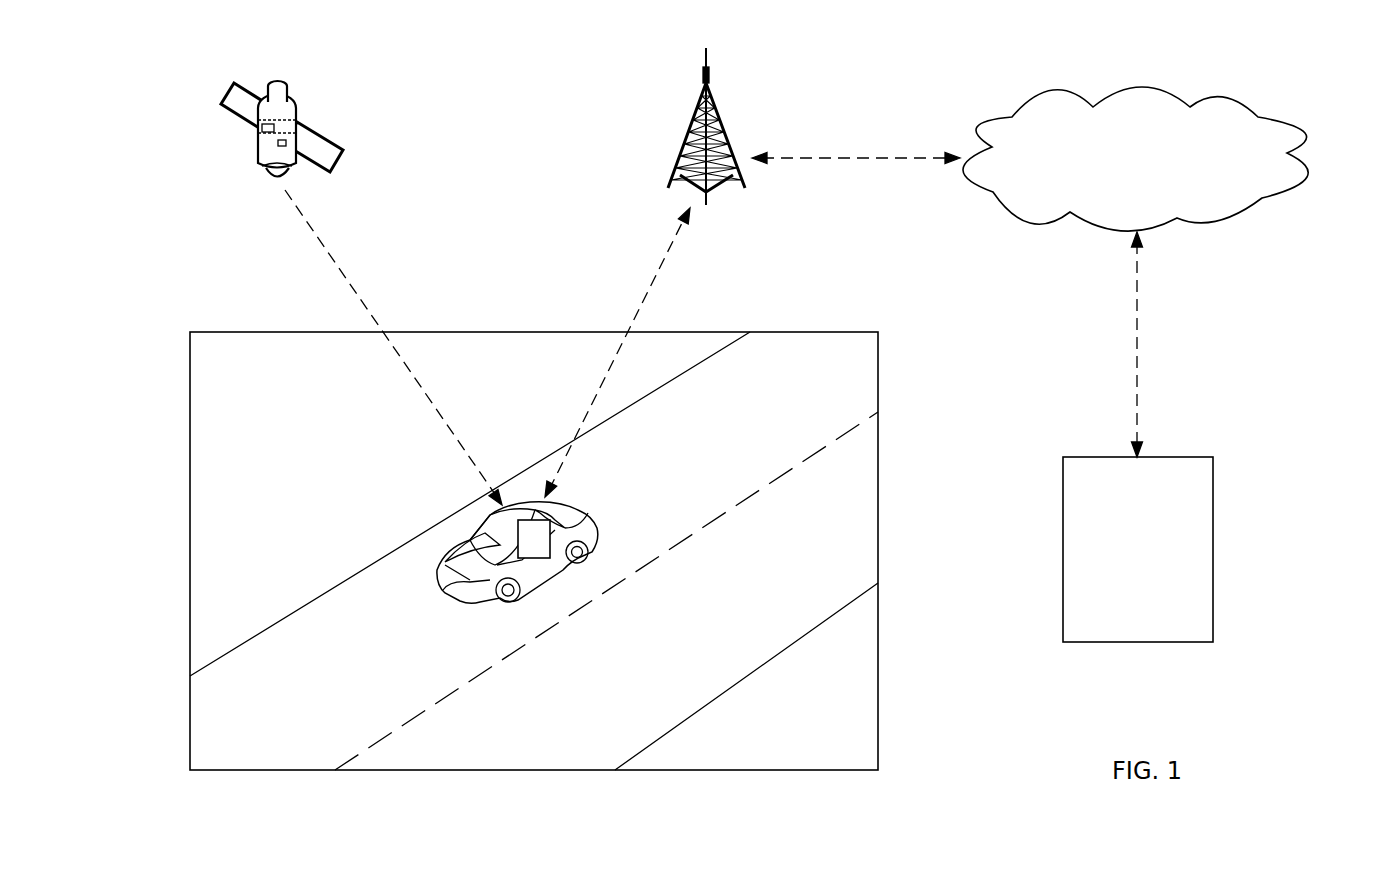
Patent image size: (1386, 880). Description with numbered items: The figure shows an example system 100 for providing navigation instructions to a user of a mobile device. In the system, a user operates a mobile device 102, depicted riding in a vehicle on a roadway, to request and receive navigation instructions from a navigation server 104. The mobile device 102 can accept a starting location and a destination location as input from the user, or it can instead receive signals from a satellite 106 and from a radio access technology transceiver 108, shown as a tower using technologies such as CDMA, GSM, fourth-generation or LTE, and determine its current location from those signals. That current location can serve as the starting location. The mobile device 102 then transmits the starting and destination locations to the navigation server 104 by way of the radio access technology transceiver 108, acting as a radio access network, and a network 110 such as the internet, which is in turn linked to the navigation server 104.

The system 100 is at (1283, 347).
The mobile device 102 is at (535, 543).
The navigation server 104 is at (1119, 572).
The satellite 106 is at (297, 123).
The radio access technology (RAT) transceiver 108 is at (683, 152).
The network 110 is at (1119, 182).